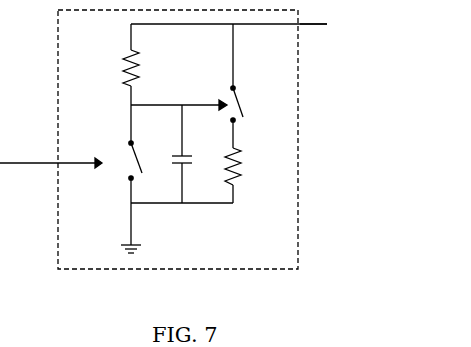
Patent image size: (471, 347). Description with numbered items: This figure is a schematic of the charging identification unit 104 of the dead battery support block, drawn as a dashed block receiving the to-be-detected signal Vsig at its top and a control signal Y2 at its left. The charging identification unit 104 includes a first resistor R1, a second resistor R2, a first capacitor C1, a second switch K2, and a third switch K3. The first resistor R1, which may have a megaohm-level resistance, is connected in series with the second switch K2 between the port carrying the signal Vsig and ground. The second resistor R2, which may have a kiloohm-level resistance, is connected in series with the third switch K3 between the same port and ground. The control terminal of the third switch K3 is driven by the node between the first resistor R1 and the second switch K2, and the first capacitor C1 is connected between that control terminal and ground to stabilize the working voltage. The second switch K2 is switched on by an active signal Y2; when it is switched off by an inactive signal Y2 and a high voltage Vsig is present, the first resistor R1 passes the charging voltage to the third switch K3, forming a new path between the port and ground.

The charging identification unit 104 is at (298, 184).
The first resistor R1 is at (117, 64).
The second resistor R2 is at (247, 161).
The first capacitor C1 is at (194, 154).
The second switch K2 is at (127, 175).
The third switch K3 is at (251, 73).
The control signal Y2 is at (51, 157).
The to-be-detected signal Vsig is at (328, 25).